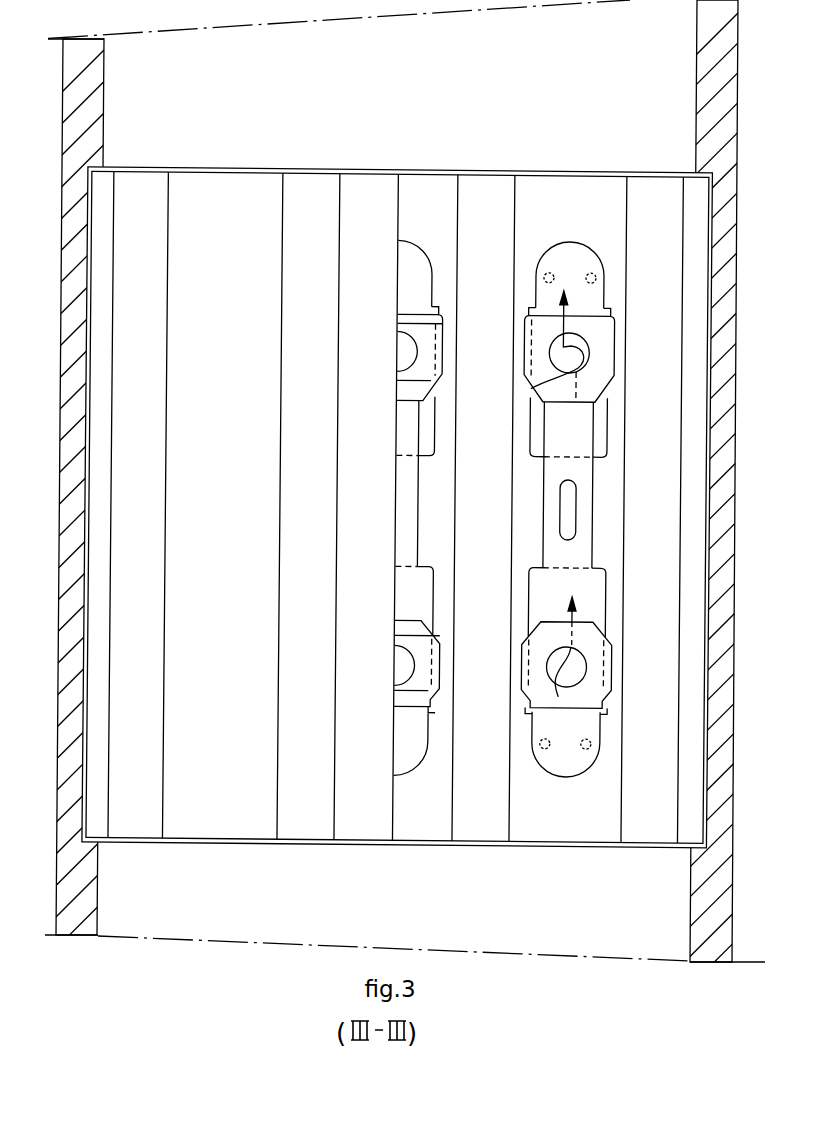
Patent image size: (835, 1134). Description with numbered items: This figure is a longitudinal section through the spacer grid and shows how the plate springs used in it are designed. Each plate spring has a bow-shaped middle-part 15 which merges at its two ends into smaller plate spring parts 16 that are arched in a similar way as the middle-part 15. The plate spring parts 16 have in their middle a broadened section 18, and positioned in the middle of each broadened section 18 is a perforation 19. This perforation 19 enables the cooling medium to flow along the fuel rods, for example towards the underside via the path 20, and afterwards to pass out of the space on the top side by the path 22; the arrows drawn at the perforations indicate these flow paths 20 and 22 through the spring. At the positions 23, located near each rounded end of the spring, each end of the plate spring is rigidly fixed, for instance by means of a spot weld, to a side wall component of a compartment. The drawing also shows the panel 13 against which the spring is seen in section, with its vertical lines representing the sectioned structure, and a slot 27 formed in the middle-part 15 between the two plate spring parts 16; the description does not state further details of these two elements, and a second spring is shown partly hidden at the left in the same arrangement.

The panel 13 is at (86, 467).
The bow-shaped middle-part 15 is at (583, 558).
The plate spring parts 16 is at (607, 407).
The broadened section 18 is at (612, 373).
The perforation 19 is at (530, 389).
The path to underside 20 is at (560, 697).
The path on top side 22 is at (578, 347).
The fixing positions 23 is at (545, 273).
The slot 27 is at (577, 507).